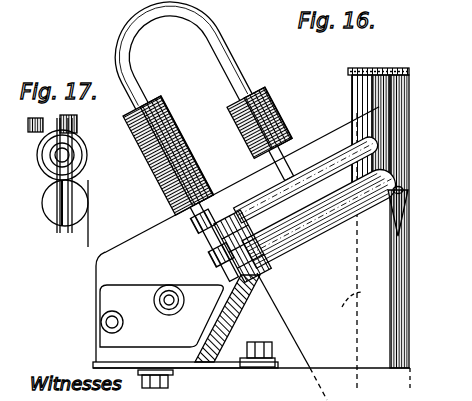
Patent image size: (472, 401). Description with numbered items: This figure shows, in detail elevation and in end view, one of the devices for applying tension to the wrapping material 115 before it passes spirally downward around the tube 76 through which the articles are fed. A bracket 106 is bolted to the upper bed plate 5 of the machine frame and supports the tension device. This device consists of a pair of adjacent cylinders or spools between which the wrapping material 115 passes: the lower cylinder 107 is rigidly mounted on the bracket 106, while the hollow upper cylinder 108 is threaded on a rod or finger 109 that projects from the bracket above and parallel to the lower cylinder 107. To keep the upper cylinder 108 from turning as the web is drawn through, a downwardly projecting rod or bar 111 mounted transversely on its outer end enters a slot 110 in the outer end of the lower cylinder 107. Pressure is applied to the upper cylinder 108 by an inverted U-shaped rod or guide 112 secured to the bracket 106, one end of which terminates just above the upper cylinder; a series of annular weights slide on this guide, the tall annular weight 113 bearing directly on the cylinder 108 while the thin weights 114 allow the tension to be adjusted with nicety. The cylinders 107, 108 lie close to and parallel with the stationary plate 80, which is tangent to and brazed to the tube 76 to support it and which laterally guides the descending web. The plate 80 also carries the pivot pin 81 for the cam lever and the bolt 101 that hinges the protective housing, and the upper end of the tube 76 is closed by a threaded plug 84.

In FIG. 16, the upper bed plate 5 is at (267, 340).
In FIG. 16, the tube 76 is at (409, 141).
In FIG. 16, the stationary plate 80 is at (167, 205).
In FIG. 16, the pivot pin 81 is at (168, 295).
In FIG. 16, the threaded plug 84 is at (398, 68).
In FIG. 16, the bolt 101 is at (101, 323).
In FIG. 16, the bracket 106 is at (215, 319).
In FIG. 16, the lower cylinder 107 is at (306, 238).
In FIG. 17, the lower cylinder 107 is at (55, 213).
In FIG. 16, the upper cylinder 108 is at (340, 147).
In FIG. 17, the upper cylinder 108 is at (81, 148).
In FIG. 16, the rod or finger 109 is at (251, 206).
In FIG. 17, the rod or finger 109 is at (75, 159).
In FIG. 17, the slot 110 is at (53, 200).
In FIG. 16, the rod or bar 111 is at (403, 192).
In FIG. 17, the rod or bar 111 is at (64, 185).
In FIG. 16, the inverted U-shaped rod 112 is at (198, 25).
In FIG. 16, the annular weight 113 is at (270, 156).
In FIG. 17, the annular weight 113 is at (67, 120).
In FIG. 16, the weights 114 is at (178, 135).
In FIG. 16, the wrapping material 115 is at (399, 233).
In FIG. 17, the wrapping material 115 is at (43, 177).